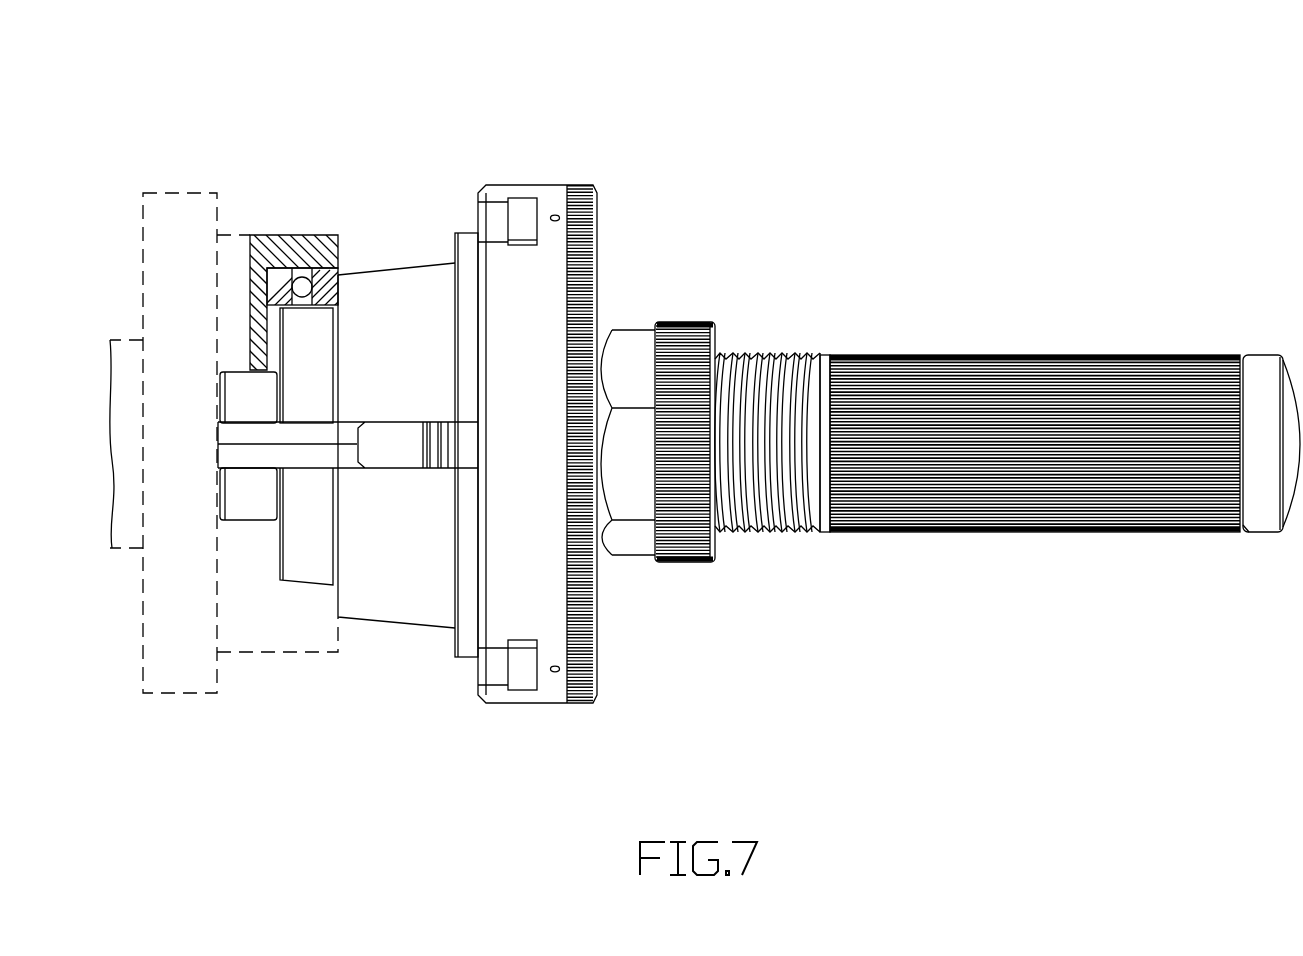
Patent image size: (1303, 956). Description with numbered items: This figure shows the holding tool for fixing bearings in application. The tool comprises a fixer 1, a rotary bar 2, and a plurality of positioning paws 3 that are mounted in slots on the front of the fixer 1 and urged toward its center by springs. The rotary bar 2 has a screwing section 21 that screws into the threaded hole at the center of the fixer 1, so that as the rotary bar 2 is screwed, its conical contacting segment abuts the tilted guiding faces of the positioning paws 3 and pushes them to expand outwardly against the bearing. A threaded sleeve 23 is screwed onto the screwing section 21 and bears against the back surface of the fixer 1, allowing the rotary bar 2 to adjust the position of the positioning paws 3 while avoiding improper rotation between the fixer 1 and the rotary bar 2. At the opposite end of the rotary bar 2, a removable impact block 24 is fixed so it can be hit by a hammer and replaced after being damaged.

The fixer 1 is at (537, 185).
The rotary bar 2 is at (1065, 355).
The positioning paws 3 is at (385, 263).
The screwing section 21 is at (803, 355).
The threaded sleeve 23 is at (683, 323).
The impact block 24 is at (1262, 355).